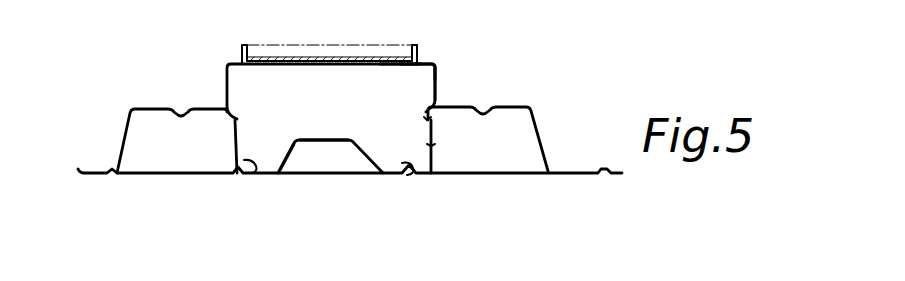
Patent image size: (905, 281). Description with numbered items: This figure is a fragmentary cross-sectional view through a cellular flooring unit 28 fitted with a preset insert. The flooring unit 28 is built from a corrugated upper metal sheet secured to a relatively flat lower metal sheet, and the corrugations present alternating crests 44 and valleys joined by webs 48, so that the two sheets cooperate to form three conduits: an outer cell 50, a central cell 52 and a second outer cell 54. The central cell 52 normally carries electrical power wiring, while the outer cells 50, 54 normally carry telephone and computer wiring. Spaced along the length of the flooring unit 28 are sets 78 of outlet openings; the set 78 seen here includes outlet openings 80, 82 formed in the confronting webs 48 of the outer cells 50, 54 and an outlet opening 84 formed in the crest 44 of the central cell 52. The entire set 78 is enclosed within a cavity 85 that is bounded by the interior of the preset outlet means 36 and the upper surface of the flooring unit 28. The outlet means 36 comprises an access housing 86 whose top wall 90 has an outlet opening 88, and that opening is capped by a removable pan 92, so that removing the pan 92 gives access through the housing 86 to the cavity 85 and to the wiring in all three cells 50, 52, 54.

The cellular flooring unit 28 is at (554, 110).
The preset outlet means 36 is at (442, 85).
The crest 44 is at (310, 142).
The web 48 is at (260, 174).
The outer cell 50 is at (162, 145).
The central cell 52 is at (338, 169).
The outer cell 54 is at (516, 136).
The set of outlet openings 78 is at (424, 145).
The outlet opening 80 is at (235, 138).
The outlet opening 82 is at (424, 131).
The outlet opening 84 is at (340, 137).
The cavity 85 is at (332, 91).
The access housing 86 is at (232, 61).
The outlet opening 88 is at (412, 64).
The top wall 90 is at (418, 63).
The removable pan 92 is at (262, 46).